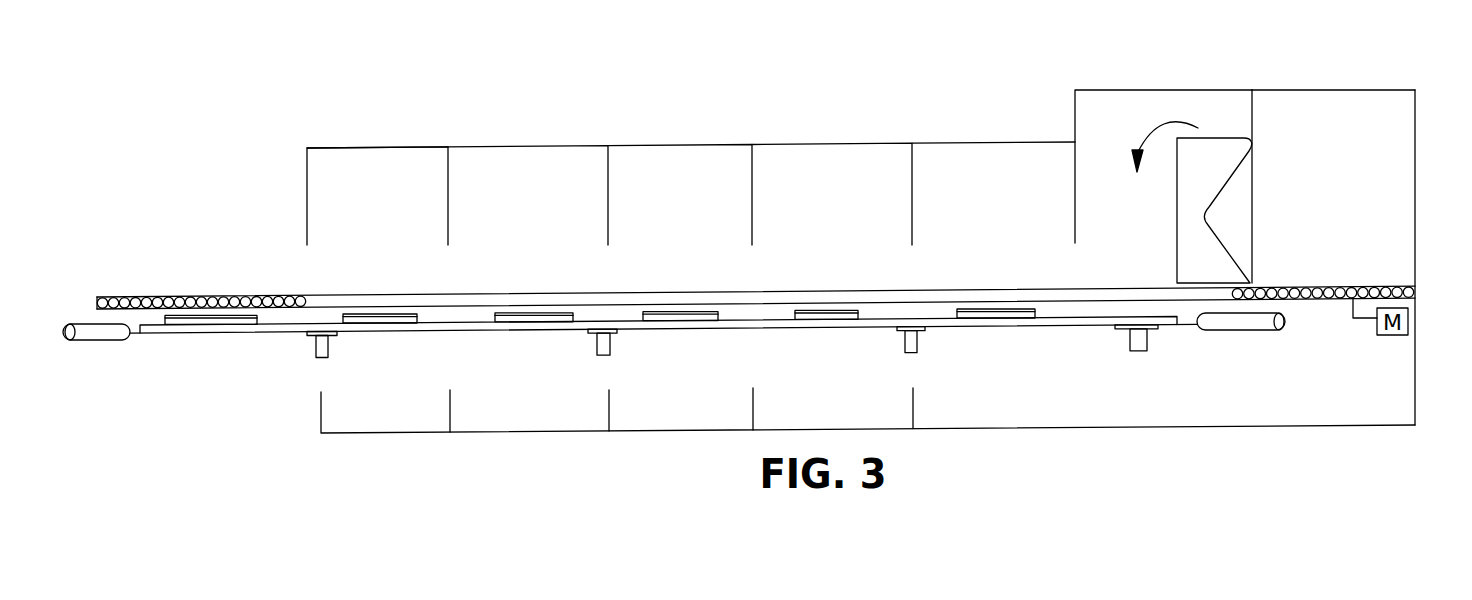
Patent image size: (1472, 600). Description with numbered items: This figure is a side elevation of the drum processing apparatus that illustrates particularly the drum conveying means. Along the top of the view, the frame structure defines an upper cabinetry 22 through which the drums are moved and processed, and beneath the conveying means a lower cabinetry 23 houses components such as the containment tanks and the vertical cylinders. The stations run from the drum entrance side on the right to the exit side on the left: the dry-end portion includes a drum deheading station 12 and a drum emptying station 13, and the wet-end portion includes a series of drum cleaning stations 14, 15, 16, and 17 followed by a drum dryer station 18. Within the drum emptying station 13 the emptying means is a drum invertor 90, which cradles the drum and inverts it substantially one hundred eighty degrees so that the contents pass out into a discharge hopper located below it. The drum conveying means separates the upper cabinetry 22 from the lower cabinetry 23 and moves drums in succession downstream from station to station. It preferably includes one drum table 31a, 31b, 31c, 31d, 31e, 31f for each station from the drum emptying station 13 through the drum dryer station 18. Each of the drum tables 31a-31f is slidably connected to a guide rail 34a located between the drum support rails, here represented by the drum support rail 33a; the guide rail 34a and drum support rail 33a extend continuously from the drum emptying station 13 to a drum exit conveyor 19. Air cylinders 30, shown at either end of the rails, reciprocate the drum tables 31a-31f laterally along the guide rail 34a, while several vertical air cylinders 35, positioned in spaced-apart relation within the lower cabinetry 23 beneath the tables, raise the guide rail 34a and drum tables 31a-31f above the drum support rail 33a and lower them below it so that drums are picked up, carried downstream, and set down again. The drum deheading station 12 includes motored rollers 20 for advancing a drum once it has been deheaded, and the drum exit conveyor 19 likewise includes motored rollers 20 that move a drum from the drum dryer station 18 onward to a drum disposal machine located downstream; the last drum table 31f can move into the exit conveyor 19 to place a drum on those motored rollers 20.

The drum deheading station 12 is at (1332, 105).
The drum emptying station 13 is at (1143, 98).
The drum cleaning station 14 is at (998, 152).
The drum cleaning station 15 is at (822, 163).
The drum cleaning station 16 is at (692, 162).
The drum cleaning station 17 is at (532, 160).
The drum dryer station 18 is at (387, 160).
The drum exit conveyor 19 is at (160, 297).
The motored rollers 20 is at (228, 297).
The upper cabinetry 22 is at (307, 170).
The lower cabinetry 23 is at (298, 345).
The air cylinders 30 is at (100, 343).
The drum table 31a is at (1004, 318).
The drum table 31b is at (826, 320).
The drum table 31c is at (688, 321).
The drum table 31d is at (528, 323).
The drum table 31e is at (380, 324).
The drum table 31f is at (218, 326).
The drum support rail 33a is at (920, 295).
The guide rail 34a is at (763, 318).
The vertical air cylinders 35 is at (316, 359).
The drum invertor 90 is at (1212, 155).